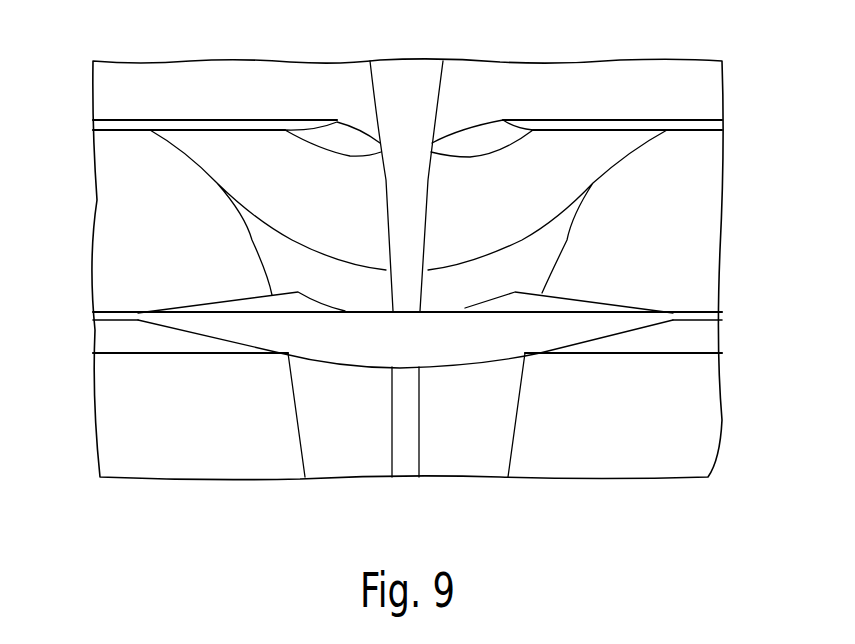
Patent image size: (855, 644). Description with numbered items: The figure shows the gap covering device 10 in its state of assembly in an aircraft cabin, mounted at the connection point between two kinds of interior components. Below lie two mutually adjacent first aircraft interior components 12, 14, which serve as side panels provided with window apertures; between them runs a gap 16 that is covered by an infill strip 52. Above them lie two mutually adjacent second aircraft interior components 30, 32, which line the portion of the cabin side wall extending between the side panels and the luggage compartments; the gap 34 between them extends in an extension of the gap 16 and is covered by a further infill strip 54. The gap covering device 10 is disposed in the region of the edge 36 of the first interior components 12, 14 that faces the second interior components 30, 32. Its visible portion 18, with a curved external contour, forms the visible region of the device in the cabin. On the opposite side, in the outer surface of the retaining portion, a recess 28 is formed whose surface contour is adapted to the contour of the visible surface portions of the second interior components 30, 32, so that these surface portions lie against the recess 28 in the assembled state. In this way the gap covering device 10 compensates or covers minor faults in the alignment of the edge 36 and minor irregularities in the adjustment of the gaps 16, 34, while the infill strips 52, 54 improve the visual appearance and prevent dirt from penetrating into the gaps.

The gap covering device 10 is at (603, 284).
The first aircraft interior component 12 is at (333, 462).
The first aircraft interior component 14 is at (635, 462).
The gap 16 is at (393, 463).
The visible portion 18 is at (557, 332).
The recess 28 is at (498, 298).
The second aircraft interior component 30 is at (118, 204).
The second aircraft interior component 32 is at (700, 185).
The gap 34 is at (379, 78).
The edge 36 is at (110, 317).
The infill strip 52 is at (405, 424).
The infill strip 54 is at (421, 80).